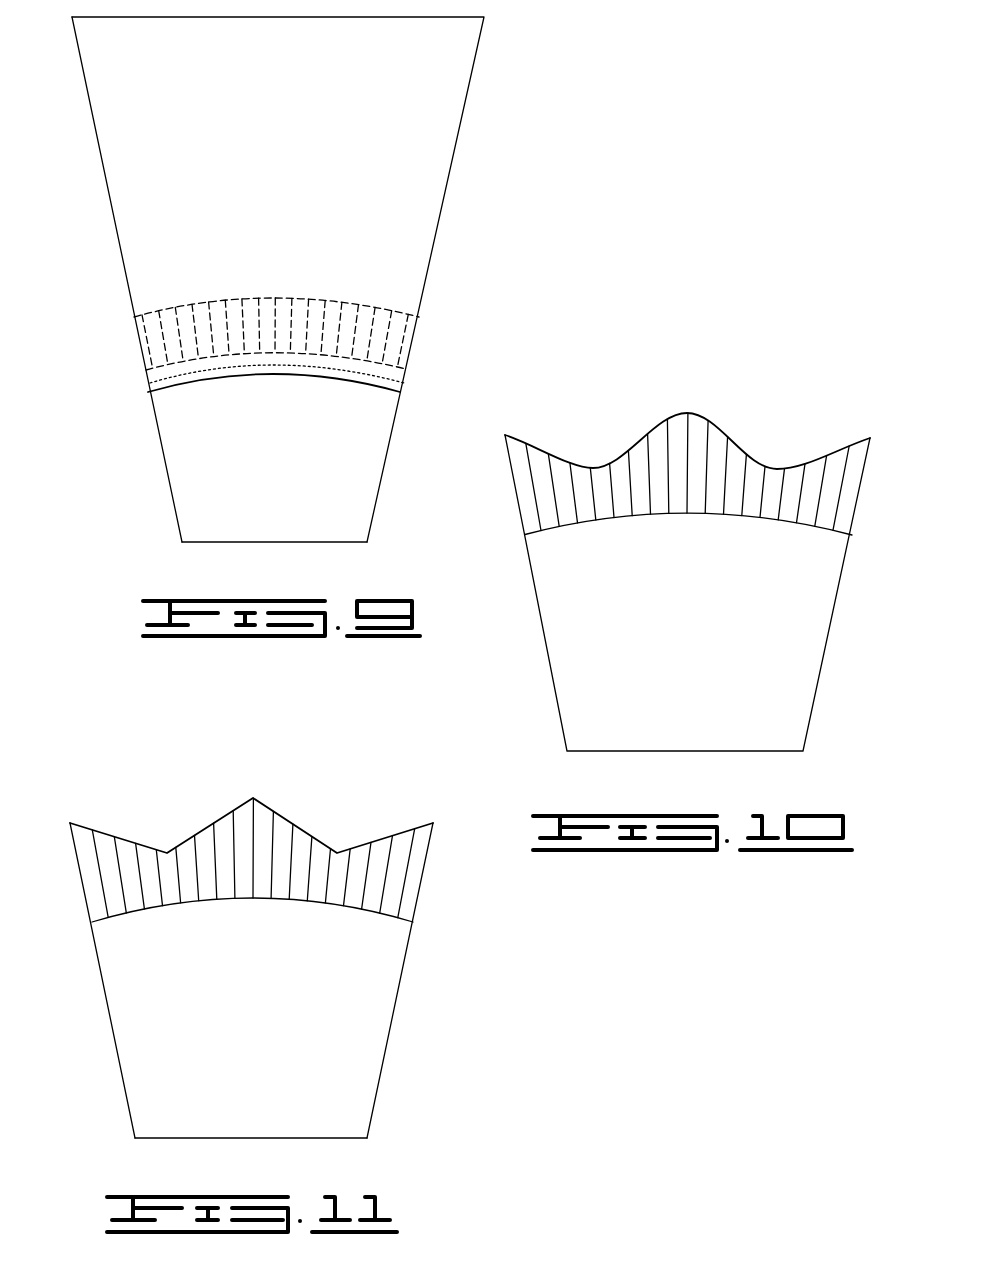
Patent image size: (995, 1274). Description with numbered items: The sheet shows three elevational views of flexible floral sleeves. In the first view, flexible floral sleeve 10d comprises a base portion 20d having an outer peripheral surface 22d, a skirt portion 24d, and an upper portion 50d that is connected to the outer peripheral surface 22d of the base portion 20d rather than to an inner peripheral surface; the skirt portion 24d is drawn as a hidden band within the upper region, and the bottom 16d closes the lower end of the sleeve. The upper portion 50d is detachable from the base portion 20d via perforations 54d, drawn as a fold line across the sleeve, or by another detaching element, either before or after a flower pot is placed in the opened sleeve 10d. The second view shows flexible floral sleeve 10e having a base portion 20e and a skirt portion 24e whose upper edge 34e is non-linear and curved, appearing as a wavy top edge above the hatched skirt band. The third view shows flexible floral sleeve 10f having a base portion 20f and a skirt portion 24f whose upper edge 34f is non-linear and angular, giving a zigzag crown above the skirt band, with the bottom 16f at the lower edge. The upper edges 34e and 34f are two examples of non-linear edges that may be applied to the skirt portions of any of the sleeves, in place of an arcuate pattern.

In FIG. 9, the flexible floral sleeve 10d is at (286, 302).
In FIG. 9, the bottom 16d is at (342, 543).
In FIG. 9, the base portion 20d is at (171, 490).
In FIG. 9, the outer peripheral surface 22d is at (200, 453).
In FIG. 9, the skirt portion 24d is at (378, 304).
In FIG. 9, the upper portion 50d is at (460, 133).
In FIG. 9, the perforations 54d is at (194, 378).
In FIG. 10, the flexible floral sleeve 10e is at (659, 572).
In FIG. 10, the base portion 20e is at (820, 678).
In FIG. 10, the skirt portion 24e is at (517, 500).
In FIG. 10, the upper edge 34e is at (722, 435).
In FIG. 11, the flexible floral sleeve 10f is at (271, 979).
In FIG. 11, the bottom 16f is at (202, 1140).
In FIG. 11, the base portion 20f is at (109, 1017).
In FIG. 11, the skirt portion 24f is at (421, 887).
In FIG. 11, the upper edge 34f is at (283, 816).